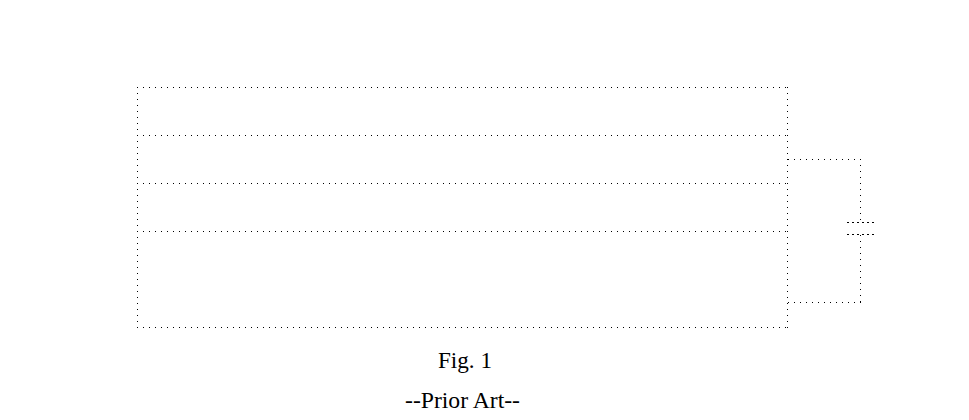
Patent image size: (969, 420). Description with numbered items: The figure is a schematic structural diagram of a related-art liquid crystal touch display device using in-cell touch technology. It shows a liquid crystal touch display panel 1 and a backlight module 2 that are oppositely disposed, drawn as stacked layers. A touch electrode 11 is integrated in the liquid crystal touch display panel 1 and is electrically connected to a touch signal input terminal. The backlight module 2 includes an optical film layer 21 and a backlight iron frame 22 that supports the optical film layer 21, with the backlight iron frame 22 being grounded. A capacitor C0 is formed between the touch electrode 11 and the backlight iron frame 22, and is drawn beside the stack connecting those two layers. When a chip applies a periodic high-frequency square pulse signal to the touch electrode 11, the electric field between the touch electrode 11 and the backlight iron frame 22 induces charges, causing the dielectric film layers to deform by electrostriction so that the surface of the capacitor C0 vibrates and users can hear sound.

The liquid crystal touch display panel 1 is at (434, 159).
The touch electrode 11 is at (474, 160).
The backlight module 2 is at (404, 279).
The optical film layer 21 is at (177, 254).
The backlight iron frame 22 is at (177, 302).
The capacitor C0 is at (848, 231).